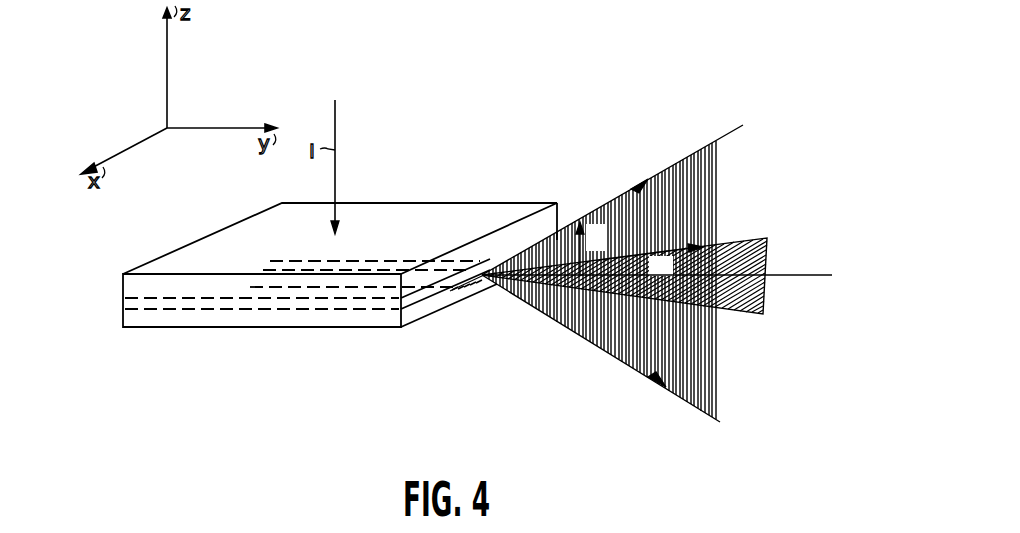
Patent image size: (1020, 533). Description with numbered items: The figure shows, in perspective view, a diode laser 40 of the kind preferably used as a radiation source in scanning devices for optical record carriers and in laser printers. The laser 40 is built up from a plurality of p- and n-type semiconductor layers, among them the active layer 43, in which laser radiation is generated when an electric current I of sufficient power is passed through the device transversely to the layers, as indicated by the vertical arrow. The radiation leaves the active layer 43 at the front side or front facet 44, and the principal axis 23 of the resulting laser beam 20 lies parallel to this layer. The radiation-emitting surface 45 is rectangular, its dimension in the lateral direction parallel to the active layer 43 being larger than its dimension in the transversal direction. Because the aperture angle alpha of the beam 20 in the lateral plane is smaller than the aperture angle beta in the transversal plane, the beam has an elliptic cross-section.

The diode laser 40 is at (403, 184).
The active layer 43 is at (293, 305).
The front facet 44 is at (413, 292).
The radiation-emitting surface 45 is at (466, 281).
The laser beam 20 is at (762, 184).
The principal axis 23 is at (779, 276).